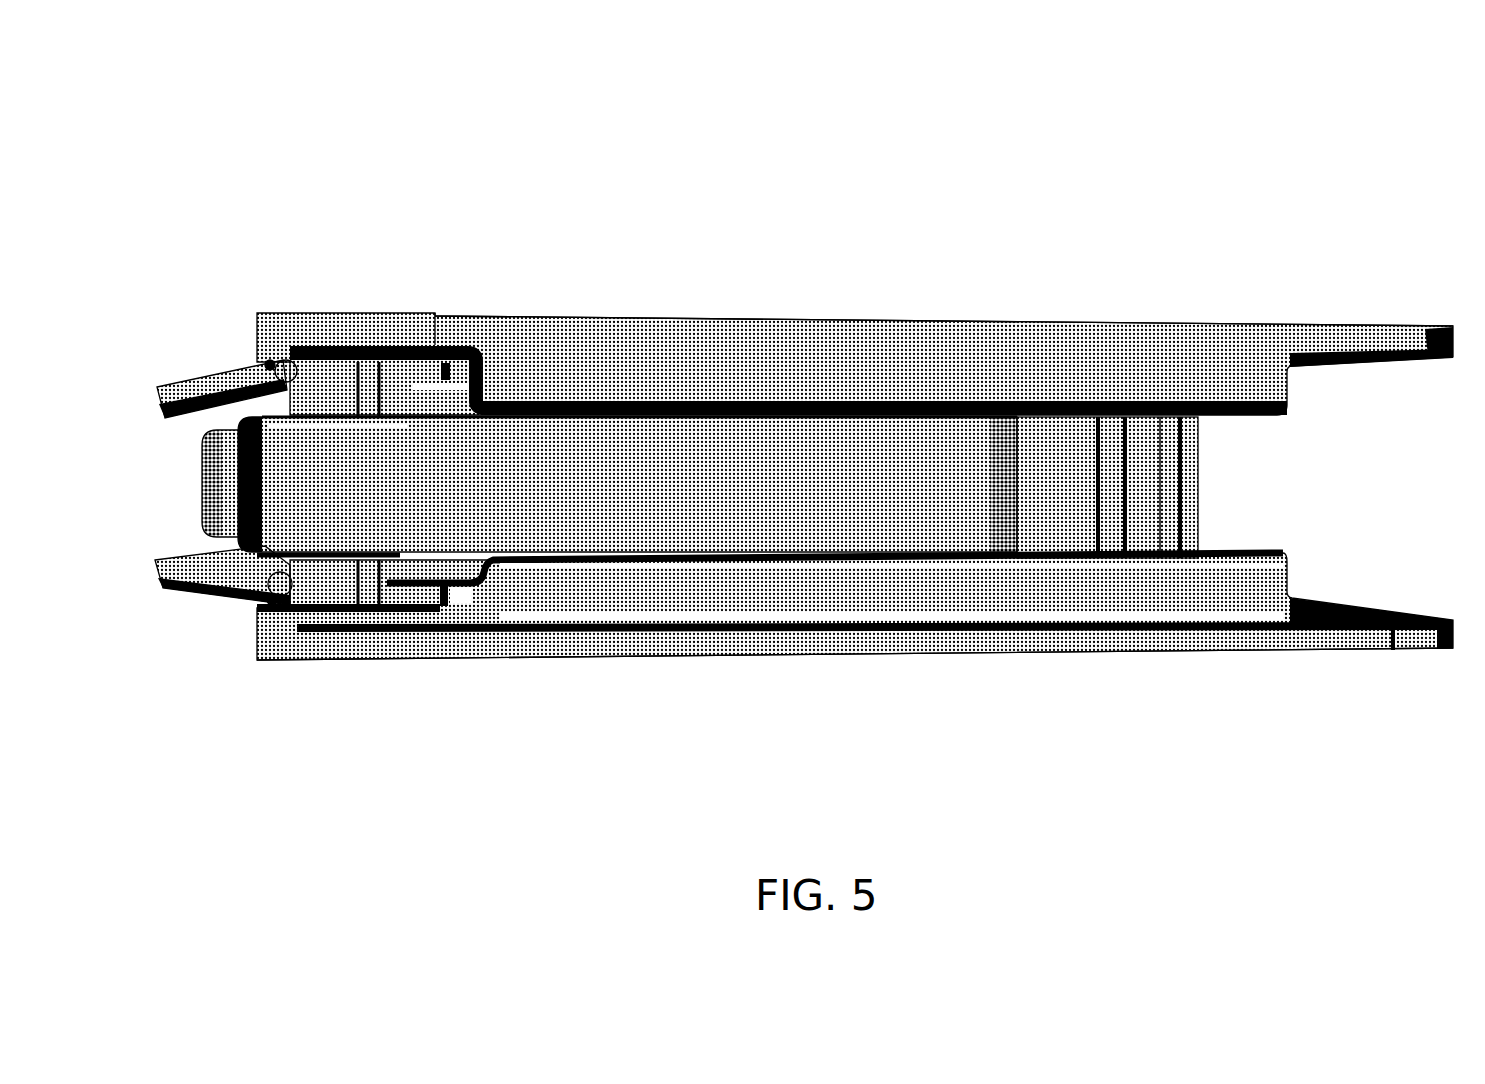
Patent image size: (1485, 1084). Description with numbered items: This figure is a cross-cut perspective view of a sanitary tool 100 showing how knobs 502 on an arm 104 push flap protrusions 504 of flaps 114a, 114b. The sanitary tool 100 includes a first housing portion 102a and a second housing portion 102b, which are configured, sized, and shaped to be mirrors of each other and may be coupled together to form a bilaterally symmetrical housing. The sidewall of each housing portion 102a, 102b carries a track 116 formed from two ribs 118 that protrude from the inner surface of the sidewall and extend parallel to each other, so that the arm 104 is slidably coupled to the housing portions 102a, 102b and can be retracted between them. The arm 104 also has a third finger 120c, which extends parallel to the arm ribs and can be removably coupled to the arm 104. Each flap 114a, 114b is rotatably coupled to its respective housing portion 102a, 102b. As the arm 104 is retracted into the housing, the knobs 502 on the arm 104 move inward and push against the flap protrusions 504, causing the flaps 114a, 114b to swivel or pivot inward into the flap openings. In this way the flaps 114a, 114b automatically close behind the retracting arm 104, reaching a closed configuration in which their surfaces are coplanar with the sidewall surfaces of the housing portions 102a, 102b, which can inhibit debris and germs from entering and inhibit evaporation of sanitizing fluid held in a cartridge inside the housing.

The sanitary tool 100 is at (388, 132).
The first housing portion 102a is at (935, 332).
The second housing portion 102b is at (960, 650).
The arm 104 is at (522, 486).
The flap 114a is at (203, 382).
The flap 114b is at (222, 592).
The track 116 is at (684, 328).
The ribs 118 is at (775, 393).
The third finger 120c is at (215, 470).
The knobs 502 is at (268, 361).
The flap protrusions 504 is at (290, 350).